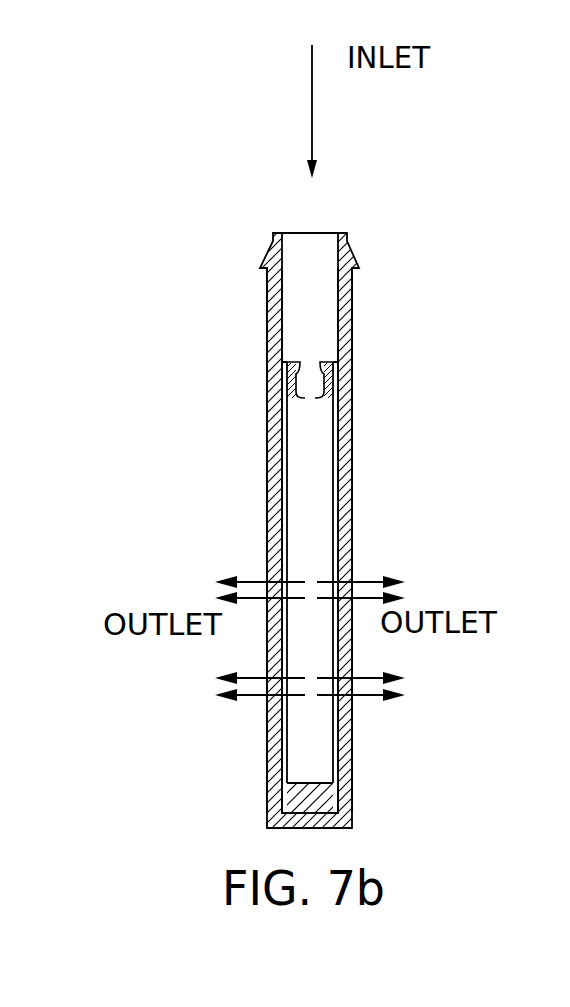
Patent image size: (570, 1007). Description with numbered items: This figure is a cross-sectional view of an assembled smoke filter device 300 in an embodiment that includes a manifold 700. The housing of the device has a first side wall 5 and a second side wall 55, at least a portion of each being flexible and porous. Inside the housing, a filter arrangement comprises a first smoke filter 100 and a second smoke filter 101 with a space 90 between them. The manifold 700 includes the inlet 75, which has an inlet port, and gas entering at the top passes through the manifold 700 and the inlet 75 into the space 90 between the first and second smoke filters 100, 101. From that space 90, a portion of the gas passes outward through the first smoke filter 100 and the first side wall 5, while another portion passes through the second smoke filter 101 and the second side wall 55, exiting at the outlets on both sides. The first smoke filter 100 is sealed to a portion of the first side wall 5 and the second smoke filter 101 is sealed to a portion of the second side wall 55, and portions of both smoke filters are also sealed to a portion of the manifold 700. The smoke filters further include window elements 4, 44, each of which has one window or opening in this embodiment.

The smoke filter device 300 is at (285, 492).
The window element 4 is at (270, 448).
The window element 44 is at (348, 470).
The manifold 700 is at (349, 436).
The inlet 75 is at (310, 355).
The space 90 is at (312, 518).
The first smoke filter 100 is at (267, 515).
The second smoke filter 101 is at (345, 515).
The first side wall 5 is at (267, 723).
The second side wall 55 is at (350, 725).